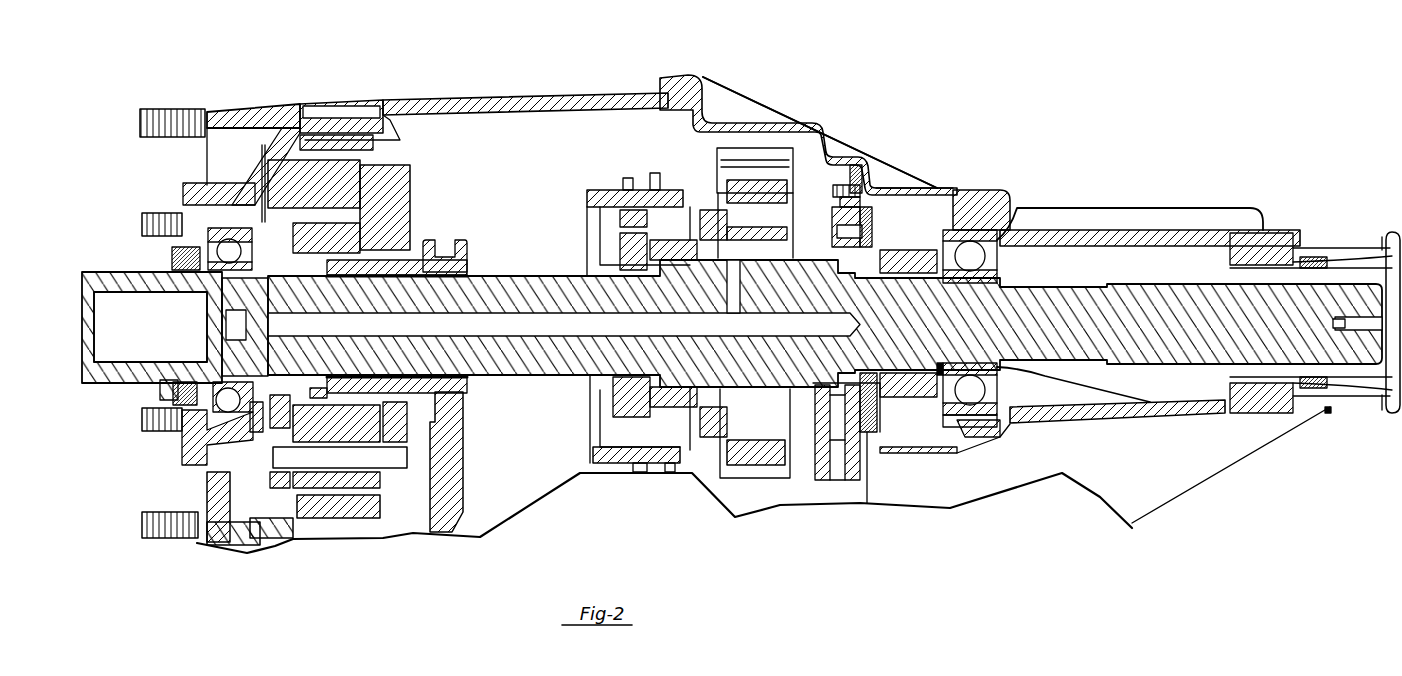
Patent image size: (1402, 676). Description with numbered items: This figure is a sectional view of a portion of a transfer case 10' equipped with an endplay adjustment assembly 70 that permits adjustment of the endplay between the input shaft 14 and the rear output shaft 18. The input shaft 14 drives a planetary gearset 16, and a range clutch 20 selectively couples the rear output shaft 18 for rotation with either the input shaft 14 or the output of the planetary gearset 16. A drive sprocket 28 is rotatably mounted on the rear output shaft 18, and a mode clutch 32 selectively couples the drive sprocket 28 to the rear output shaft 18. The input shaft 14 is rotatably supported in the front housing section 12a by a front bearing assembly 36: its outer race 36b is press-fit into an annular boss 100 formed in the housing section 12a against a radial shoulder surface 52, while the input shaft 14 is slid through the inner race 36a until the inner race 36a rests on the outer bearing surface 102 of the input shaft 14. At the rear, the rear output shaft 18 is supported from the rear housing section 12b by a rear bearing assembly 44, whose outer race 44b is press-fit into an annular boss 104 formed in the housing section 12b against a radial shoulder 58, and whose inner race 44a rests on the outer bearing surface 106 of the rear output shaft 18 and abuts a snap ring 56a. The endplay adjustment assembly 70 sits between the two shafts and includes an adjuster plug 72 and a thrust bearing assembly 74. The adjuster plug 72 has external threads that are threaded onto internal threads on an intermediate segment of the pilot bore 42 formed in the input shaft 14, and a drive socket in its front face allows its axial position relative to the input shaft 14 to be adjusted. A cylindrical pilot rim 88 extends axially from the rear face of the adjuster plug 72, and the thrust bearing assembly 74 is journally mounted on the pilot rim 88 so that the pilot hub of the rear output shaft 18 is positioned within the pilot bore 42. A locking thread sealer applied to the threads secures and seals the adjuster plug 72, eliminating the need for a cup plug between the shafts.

The transfer case 10' is at (820, 105).
The front housing section 12a is at (335, 125).
The rear housing section 12b is at (1136, 230).
The input shaft 14 is at (100, 273).
The planetary gearset 16 is at (418, 160).
The rear output shaft 18 is at (1174, 282).
The range clutch 20 is at (470, 242).
The drive sprocket 28 is at (766, 187).
The mode clutch 32 is at (585, 189).
The front bearing assembly 36 is at (216, 237).
The inner race 36a is at (198, 290).
The outer race 36b is at (247, 228).
The pilot bore 42 is at (164, 392).
The rear bearing assembly 44 is at (1010, 232).
The inner race 44a is at (985, 310).
The outer race 44b is at (992, 422).
The radial shoulder surface 52 is at (232, 450).
The snap ring 56a is at (927, 247).
The radial shoulder 58 is at (988, 254).
The endplay adjustment assembly 70 is at (206, 323).
The adjuster plug 72 is at (230, 295).
The thrust bearing assembly 74 is at (330, 365).
The cylindrical pilot rim 88 is at (356, 373).
The annular boss 100 is at (212, 428).
The outer bearing surface 102 is at (214, 407).
The annular boss 104 is at (953, 232).
The outer bearing surface 106 is at (1060, 385).